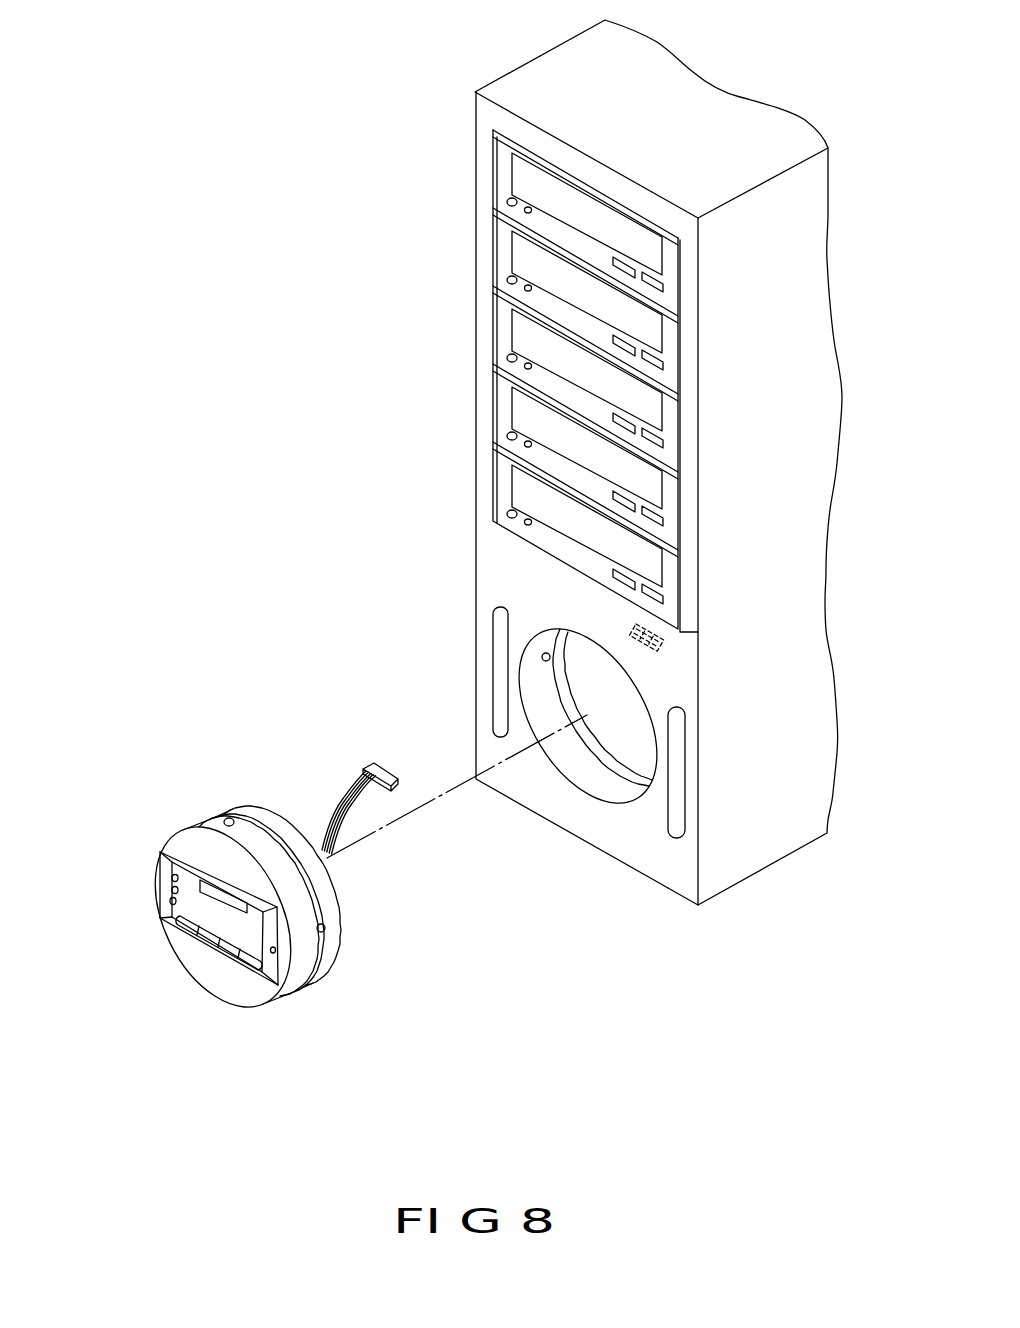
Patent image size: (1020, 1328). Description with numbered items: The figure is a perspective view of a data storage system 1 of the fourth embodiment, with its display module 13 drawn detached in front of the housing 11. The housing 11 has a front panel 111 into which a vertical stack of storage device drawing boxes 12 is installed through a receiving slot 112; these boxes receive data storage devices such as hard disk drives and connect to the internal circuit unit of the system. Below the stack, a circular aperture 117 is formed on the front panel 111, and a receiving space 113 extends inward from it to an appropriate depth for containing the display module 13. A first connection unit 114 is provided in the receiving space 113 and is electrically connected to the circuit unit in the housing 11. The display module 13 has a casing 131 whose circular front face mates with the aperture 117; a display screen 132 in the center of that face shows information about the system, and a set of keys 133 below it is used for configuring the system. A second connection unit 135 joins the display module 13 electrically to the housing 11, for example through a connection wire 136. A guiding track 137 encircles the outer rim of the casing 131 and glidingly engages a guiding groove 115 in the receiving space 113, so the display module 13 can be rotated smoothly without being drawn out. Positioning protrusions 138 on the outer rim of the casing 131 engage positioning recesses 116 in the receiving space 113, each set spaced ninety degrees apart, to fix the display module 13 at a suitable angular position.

The data storage system 1 is at (374, 148).
The housing 11 is at (450, 355).
The storage device drawing boxes 12 is at (522, 253).
The display module 13 is at (162, 830).
The front panel 111 is at (480, 723).
The receiving slot 112 is at (490, 410).
The receiving space 113 is at (617, 790).
The first connection unit 114 is at (636, 620).
The guiding groove 115 is at (597, 750).
The positioning recesses 116 is at (541, 657).
The aperture 117 is at (608, 693).
The casing 131 is at (338, 943).
The display screen 132 is at (197, 897).
The set of keys 133 is at (188, 923).
The second connection unit 135 is at (368, 762).
The ribbon cable 136 is at (316, 838).
The guiding track 137 is at (323, 883).
The positioning protrusions 138 is at (326, 928).